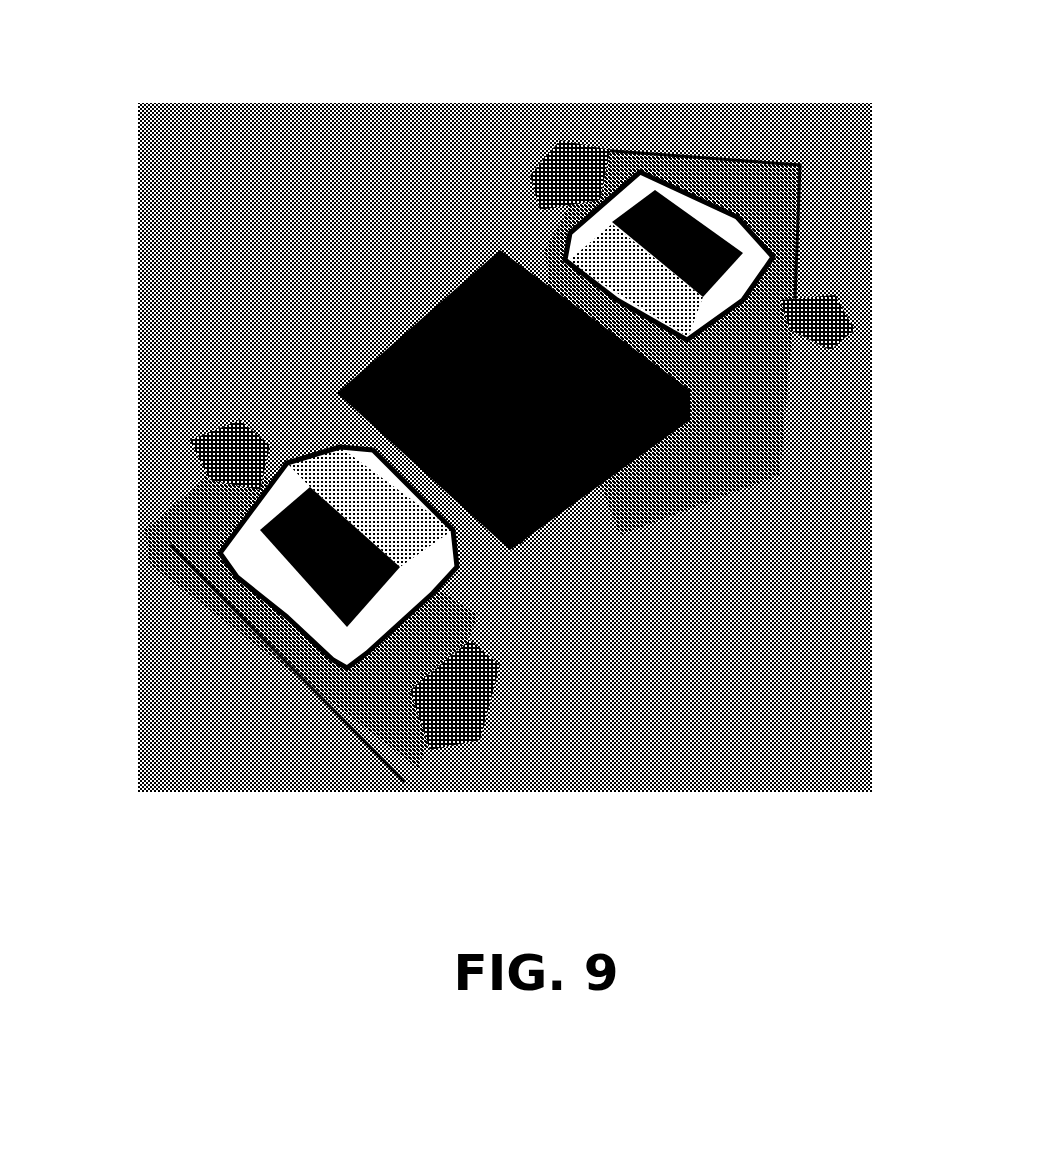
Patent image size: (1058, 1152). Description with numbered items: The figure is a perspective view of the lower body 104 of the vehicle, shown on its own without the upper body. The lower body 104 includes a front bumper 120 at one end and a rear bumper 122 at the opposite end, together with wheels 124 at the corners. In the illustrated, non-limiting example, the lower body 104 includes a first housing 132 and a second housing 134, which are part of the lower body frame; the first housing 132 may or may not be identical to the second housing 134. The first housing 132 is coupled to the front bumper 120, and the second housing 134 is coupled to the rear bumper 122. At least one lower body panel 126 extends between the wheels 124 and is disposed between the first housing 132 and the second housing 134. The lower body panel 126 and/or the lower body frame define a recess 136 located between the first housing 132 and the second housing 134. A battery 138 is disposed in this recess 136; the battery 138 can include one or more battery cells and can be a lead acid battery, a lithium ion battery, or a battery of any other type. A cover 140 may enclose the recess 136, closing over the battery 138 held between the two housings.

The lower body 104 is at (259, 84).
The front bumper 120 is at (282, 695).
The rear bumper 122 is at (676, 145).
The wheels 124 is at (565, 150).
The lower body panel 126 is at (710, 440).
The first housing 132 is at (330, 634).
The second housing 134 is at (748, 245).
The recess 136 is at (404, 330).
The battery 138 is at (483, 340).
The cover 140 is at (575, 498).